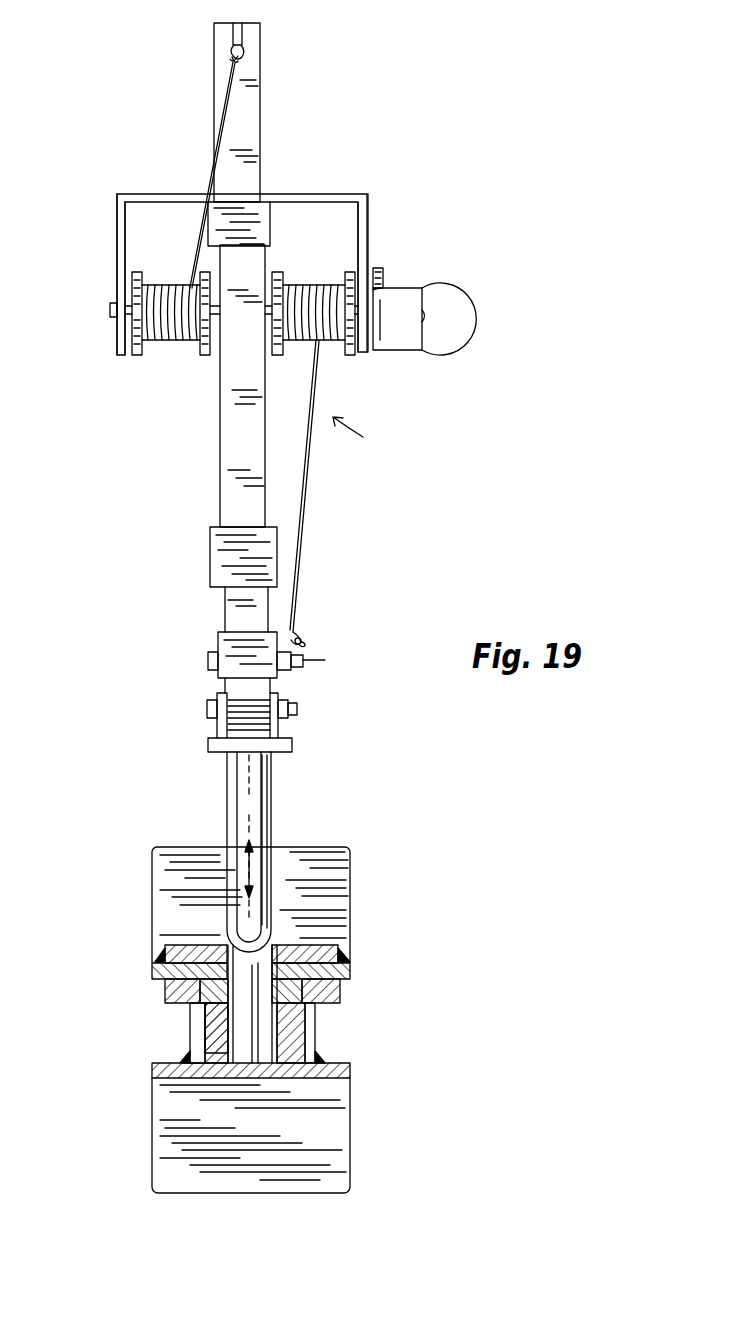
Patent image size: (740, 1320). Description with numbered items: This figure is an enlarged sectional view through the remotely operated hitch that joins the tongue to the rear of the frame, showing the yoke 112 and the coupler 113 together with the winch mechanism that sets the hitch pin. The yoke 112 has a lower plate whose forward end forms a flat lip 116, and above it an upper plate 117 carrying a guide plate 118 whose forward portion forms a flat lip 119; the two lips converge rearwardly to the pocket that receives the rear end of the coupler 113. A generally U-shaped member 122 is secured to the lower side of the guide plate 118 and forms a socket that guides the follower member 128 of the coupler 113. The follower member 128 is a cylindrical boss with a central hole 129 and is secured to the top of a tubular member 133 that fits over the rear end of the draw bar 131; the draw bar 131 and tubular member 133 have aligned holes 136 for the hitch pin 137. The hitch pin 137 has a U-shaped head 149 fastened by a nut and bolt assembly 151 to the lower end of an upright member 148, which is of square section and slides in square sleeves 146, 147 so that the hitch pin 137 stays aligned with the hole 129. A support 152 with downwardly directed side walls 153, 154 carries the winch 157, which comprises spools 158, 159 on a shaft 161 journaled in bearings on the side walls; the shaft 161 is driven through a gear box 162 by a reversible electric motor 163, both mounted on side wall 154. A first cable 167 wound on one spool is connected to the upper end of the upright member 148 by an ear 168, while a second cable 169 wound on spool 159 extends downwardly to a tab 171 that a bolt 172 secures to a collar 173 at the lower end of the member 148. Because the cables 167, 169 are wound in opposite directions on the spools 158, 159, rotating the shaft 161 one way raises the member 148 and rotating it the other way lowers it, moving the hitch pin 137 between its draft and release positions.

The yoke 112 is at (354, 858).
The coupler 113 is at (333, 1047).
The lip 116 is at (164, 1132).
The upper plate 117 is at (322, 948).
The guide plate 118 is at (152, 970).
The lip 119 is at (166, 867).
The U-shaped member 122 is at (165, 997).
The follower member 128 is at (340, 990).
The central hole 129 is at (258, 967).
The draw bar 131 is at (206, 1034).
The tubular member 133 is at (190, 1015).
The aligned holes 136 is at (263, 1028).
The hitch pin 137 is at (258, 787).
The square sleeve 146 is at (270, 192).
The square sleeve 147 is at (218, 551).
The upright member 148 is at (230, 432).
The U-shaped head 149 is at (292, 740).
The nut and bolt assembly 151 is at (298, 708).
The support 152 is at (132, 192).
The side wall 153 is at (120, 247).
The side wall 154 is at (370, 218).
The winch 157 is at (372, 434).
The spool 158 is at (138, 356).
The spool 159 is at (283, 280).
The shaft 161 is at (110, 310).
The gear box 162 is at (396, 344).
The electric motor 163 is at (452, 305).
The first cable 167 is at (204, 156).
The ear 168 is at (260, 32).
The second cable 169 is at (312, 466).
The tab 171 is at (300, 632).
The bolt 172 is at (208, 658).
The collar 173 is at (224, 632).